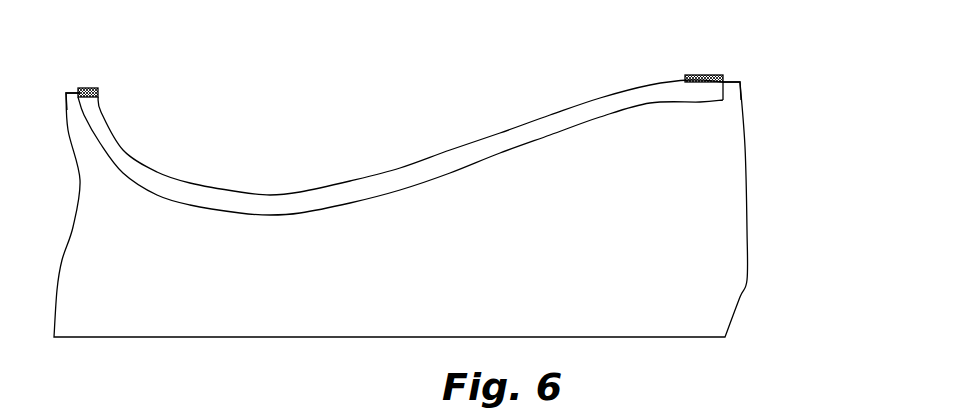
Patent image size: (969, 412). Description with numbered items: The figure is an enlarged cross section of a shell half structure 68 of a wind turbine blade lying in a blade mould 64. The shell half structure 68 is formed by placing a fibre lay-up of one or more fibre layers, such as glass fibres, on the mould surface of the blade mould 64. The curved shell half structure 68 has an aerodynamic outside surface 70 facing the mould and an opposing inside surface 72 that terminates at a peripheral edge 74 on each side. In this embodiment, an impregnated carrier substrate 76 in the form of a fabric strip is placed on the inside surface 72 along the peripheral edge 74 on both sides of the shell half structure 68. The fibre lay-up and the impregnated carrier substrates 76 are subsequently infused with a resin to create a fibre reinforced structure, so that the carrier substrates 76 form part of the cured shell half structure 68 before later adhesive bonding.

The blade mould 64 is at (742, 240).
The shell half structure 68 is at (425, 170).
The aerodynamic outside surface 70 is at (231, 214).
The inside surface 72 is at (268, 195).
The peripheral edge 74 is at (80, 92).
The impregnated carrier substrate 76 is at (90, 88).